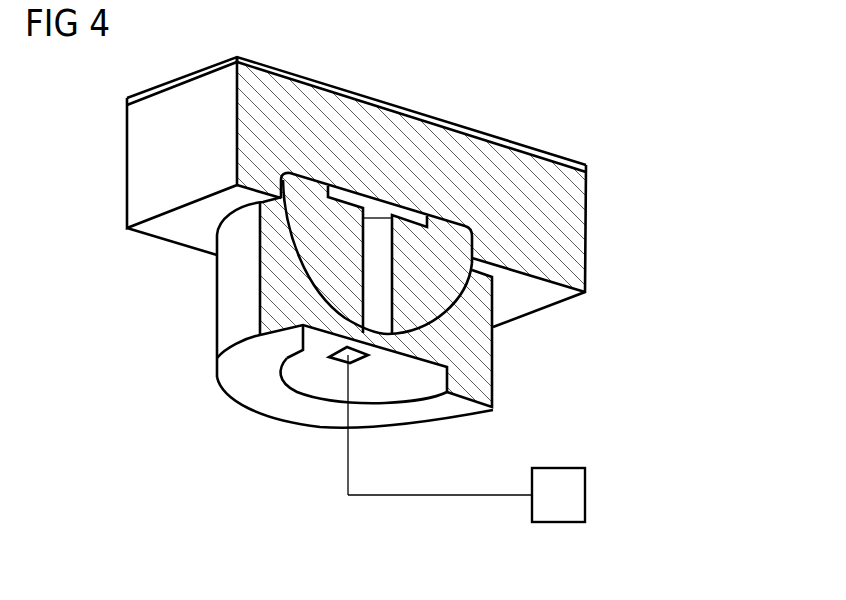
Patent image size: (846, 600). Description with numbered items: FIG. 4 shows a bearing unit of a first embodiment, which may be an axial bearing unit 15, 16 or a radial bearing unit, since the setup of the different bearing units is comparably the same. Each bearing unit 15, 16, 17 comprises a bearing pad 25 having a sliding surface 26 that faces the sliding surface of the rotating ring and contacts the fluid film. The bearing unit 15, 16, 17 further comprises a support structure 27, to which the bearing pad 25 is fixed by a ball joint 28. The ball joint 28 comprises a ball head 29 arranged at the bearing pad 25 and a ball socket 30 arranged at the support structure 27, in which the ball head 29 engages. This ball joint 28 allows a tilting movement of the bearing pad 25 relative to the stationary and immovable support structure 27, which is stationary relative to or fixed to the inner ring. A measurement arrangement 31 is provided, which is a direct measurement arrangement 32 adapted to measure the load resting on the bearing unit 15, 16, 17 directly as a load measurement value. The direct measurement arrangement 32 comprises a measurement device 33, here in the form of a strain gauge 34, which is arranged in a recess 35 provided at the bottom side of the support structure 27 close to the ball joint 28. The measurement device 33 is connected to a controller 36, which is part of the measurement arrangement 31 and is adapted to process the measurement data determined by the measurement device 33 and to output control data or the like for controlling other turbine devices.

The axial bearing unit 15 is at (721, 108).
The axial bearing unit 16 is at (721, 108).
The bearing unit 17 is at (650, 129).
The bearing pad 25 is at (580, 233).
The sliding surface 26 is at (468, 128).
The support structure 27 is at (485, 358).
The ball joint 28 is at (308, 300).
The ball head 29 is at (310, 203).
The ball socket 30 is at (313, 285).
The measurement arrangement 31 is at (372, 505).
The direct measurement arrangement 32 is at (435, 505).
The measurement device 33 is at (329, 366).
The strain gauge 34 is at (366, 359).
The recess 35 is at (291, 373).
The controller 36 is at (586, 494).